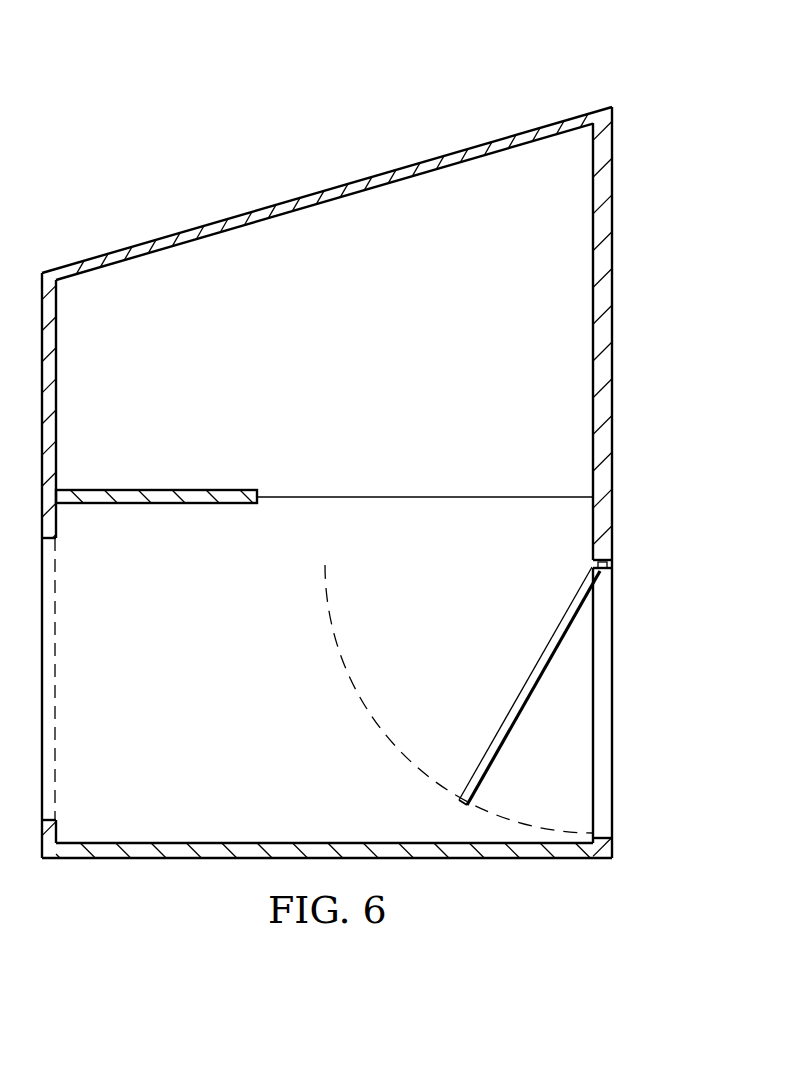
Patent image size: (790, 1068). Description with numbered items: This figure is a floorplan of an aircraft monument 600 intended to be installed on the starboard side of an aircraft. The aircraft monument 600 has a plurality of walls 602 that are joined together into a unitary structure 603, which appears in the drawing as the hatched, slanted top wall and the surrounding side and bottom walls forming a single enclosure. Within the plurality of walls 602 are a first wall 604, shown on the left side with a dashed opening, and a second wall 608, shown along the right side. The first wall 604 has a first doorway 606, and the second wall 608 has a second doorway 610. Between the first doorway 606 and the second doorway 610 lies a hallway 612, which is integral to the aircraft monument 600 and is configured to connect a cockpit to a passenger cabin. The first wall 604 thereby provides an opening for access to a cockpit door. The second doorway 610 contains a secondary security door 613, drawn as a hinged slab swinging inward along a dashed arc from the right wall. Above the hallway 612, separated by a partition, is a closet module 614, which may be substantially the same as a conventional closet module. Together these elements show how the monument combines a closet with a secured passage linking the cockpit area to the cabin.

The aircraft monument 600 is at (196, 72).
The plurality of walls 602 is at (649, 482).
The unitary structure 603 is at (185, 228).
The first wall 604 is at (56, 392).
The first doorway 606 is at (56, 680).
The second wall 608 is at (612, 300).
The second doorway 610 is at (614, 714).
The hallway 612 is at (218, 600).
The secondary security door 613 is at (520, 678).
The closet module 614 is at (385, 328).